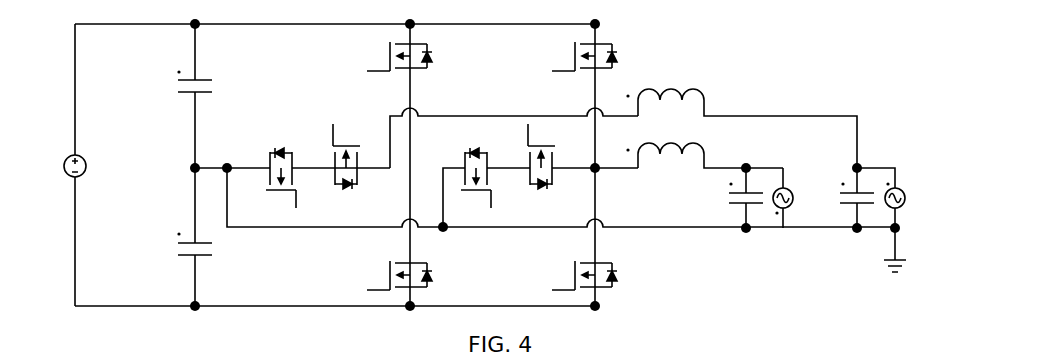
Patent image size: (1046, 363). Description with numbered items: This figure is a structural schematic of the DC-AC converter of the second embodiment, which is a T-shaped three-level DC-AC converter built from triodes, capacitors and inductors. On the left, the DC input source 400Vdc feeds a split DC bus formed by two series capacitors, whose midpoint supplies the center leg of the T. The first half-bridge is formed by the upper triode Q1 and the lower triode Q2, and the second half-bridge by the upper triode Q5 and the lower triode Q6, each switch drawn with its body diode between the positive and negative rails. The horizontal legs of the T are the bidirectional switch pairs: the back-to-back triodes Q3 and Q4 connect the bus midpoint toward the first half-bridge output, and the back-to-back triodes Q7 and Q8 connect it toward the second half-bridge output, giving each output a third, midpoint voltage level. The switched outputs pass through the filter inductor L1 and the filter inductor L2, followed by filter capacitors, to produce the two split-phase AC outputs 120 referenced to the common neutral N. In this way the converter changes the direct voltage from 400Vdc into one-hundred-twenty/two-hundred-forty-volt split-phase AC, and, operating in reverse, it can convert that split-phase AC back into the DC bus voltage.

The 400 V DC source 400Vdc is at (107, 166).
The triode Q1 is at (389, 56).
The triode Q2 is at (389, 275).
The triode Q3 is at (281, 167).
The triode Q4 is at (346, 168).
The triode Q5 is at (574, 56).
The triode Q6 is at (574, 275).
The triode Q7 is at (476, 167).
The triode Q8 is at (541, 168).
The inductor L1 is at (741, 116).
The inductor L2 is at (704, 168).
The 120 V AC output 120 is at (831, 214).
The neutral / ground N is at (895, 278).